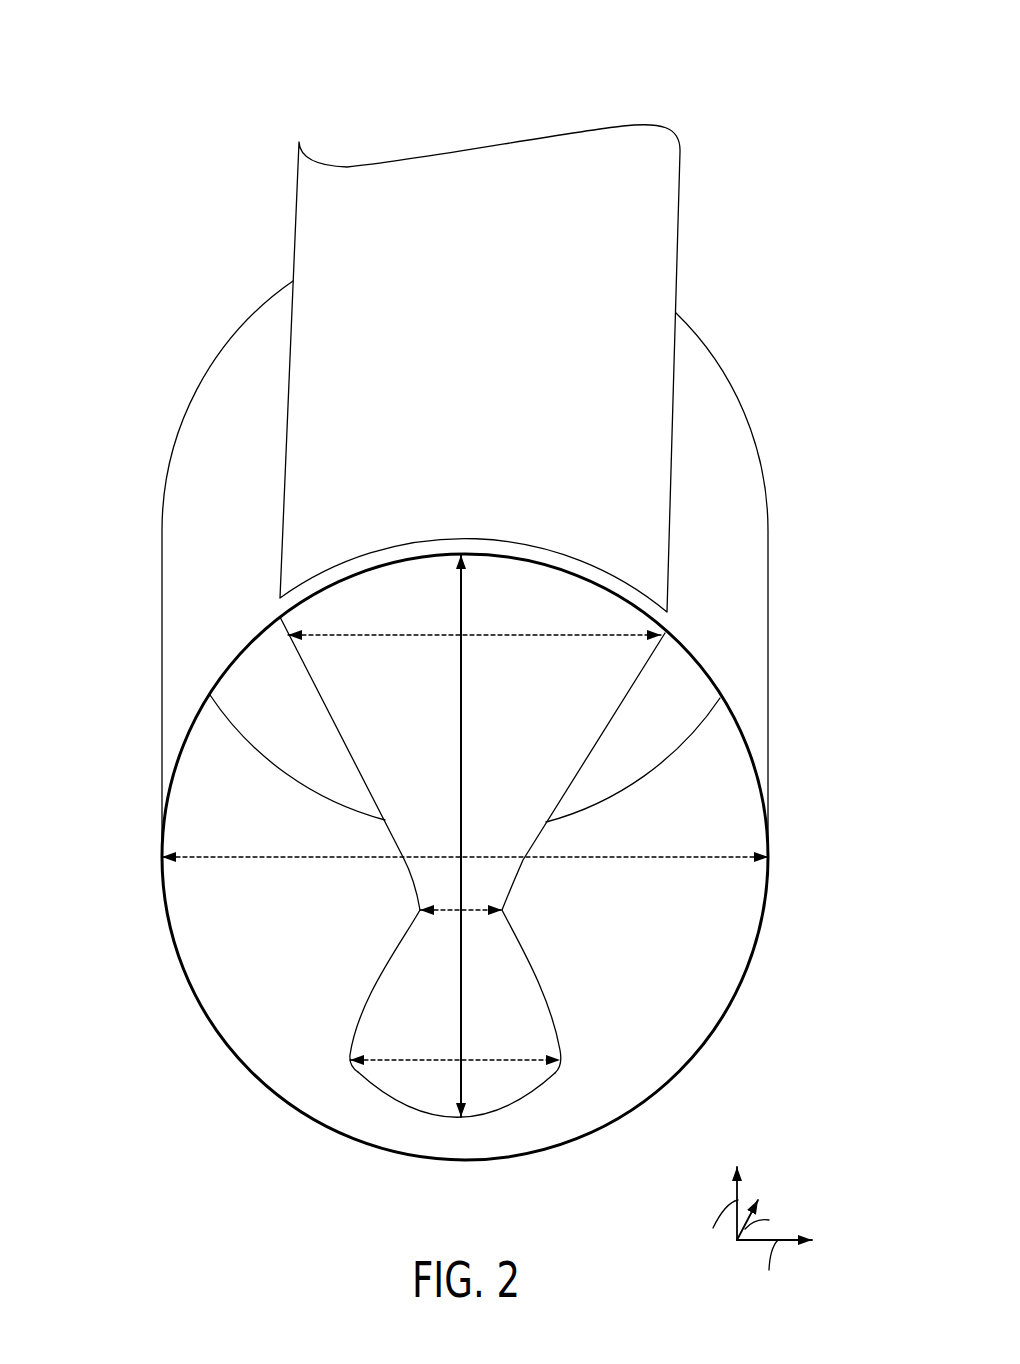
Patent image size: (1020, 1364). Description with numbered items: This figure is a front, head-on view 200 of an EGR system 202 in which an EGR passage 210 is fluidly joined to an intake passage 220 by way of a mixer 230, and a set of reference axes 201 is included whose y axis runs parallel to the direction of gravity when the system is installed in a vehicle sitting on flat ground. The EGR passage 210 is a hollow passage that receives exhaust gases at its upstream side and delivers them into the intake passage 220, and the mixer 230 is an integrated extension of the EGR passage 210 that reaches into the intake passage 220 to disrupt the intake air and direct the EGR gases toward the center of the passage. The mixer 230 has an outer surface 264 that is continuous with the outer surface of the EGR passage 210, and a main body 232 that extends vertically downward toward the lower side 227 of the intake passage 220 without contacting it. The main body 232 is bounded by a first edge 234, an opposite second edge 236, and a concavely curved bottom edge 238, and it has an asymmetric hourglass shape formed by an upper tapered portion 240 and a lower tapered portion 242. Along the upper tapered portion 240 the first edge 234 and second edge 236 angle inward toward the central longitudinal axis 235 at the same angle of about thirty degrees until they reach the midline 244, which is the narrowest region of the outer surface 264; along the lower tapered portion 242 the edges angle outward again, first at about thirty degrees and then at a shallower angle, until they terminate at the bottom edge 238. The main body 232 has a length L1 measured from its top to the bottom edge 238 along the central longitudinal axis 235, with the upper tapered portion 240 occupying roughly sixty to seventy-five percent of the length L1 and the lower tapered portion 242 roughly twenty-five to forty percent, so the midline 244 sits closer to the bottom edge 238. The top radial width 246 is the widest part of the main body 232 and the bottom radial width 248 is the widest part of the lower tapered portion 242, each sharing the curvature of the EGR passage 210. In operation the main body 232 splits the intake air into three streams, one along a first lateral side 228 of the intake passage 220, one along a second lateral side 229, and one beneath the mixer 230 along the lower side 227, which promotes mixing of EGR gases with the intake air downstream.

The front/head-on view 200 is at (779, 46).
The set of reference axes 201 is at (779, 1185).
The EGR system 202 is at (820, 160).
The EGR passage 210 is at (680, 207).
The intake passage 220 is at (771, 540).
The lower side 227 is at (466, 1172).
The first lateral side 228 is at (140, 715).
The second lateral side 229 is at (783, 715).
The mixer 230 is at (345, 600).
The main body 232 is at (348, 710).
The first edge 234 is at (525, 955).
The central longitudinal axis 235 is at (463, 810).
The second edge 236 is at (390, 960).
The bottom edge 238 is at (500, 1107).
The upper tapered portion 240 is at (600, 708).
The lower tapered portion 242 is at (537, 1003).
The midline 244 is at (475, 910).
The top radial width 246 is at (537, 635).
The bottom radial width 248 is at (480, 1060).
The outer surface 264 is at (567, 703).
The length L1 is at (465, 740).